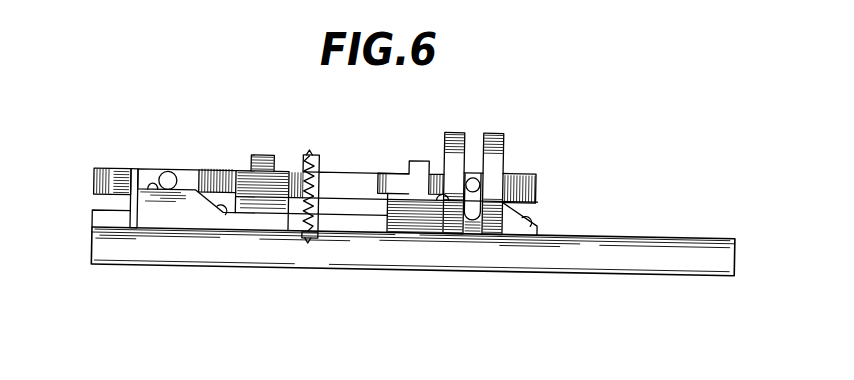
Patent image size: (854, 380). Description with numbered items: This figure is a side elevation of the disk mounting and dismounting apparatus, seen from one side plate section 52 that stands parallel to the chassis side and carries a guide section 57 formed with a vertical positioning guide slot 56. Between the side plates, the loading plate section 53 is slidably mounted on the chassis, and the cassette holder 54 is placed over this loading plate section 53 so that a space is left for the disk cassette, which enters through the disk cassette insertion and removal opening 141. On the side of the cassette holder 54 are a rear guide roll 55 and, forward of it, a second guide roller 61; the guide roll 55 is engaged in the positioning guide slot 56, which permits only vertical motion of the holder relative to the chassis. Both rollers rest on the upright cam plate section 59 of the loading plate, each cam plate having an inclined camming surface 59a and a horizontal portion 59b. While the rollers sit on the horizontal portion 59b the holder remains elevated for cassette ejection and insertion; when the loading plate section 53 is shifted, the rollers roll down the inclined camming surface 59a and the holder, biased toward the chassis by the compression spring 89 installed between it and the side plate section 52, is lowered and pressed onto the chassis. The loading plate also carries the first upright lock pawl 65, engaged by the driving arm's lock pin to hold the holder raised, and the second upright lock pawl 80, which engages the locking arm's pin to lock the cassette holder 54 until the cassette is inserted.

The side plate section 52 is at (398, 256).
The loading plate section 53 is at (281, 219).
The cassette holder 54 is at (215, 173).
The guide roll 55 is at (479, 183).
The vertical positioning guide slot 56 is at (471, 147).
The guide section 57 is at (494, 140).
The cam plate section 59 is at (183, 218).
The inclined camming surface 59a is at (227, 214).
The horizontal portion 59b is at (152, 192).
The guide roller 61 is at (167, 171).
The first upright lock pawl 65 is at (274, 163).
The second upright lock pawl 80 is at (417, 161).
The compression spring 89 is at (321, 176).
The disk cassette insertion and removal opening 141 is at (93, 202).